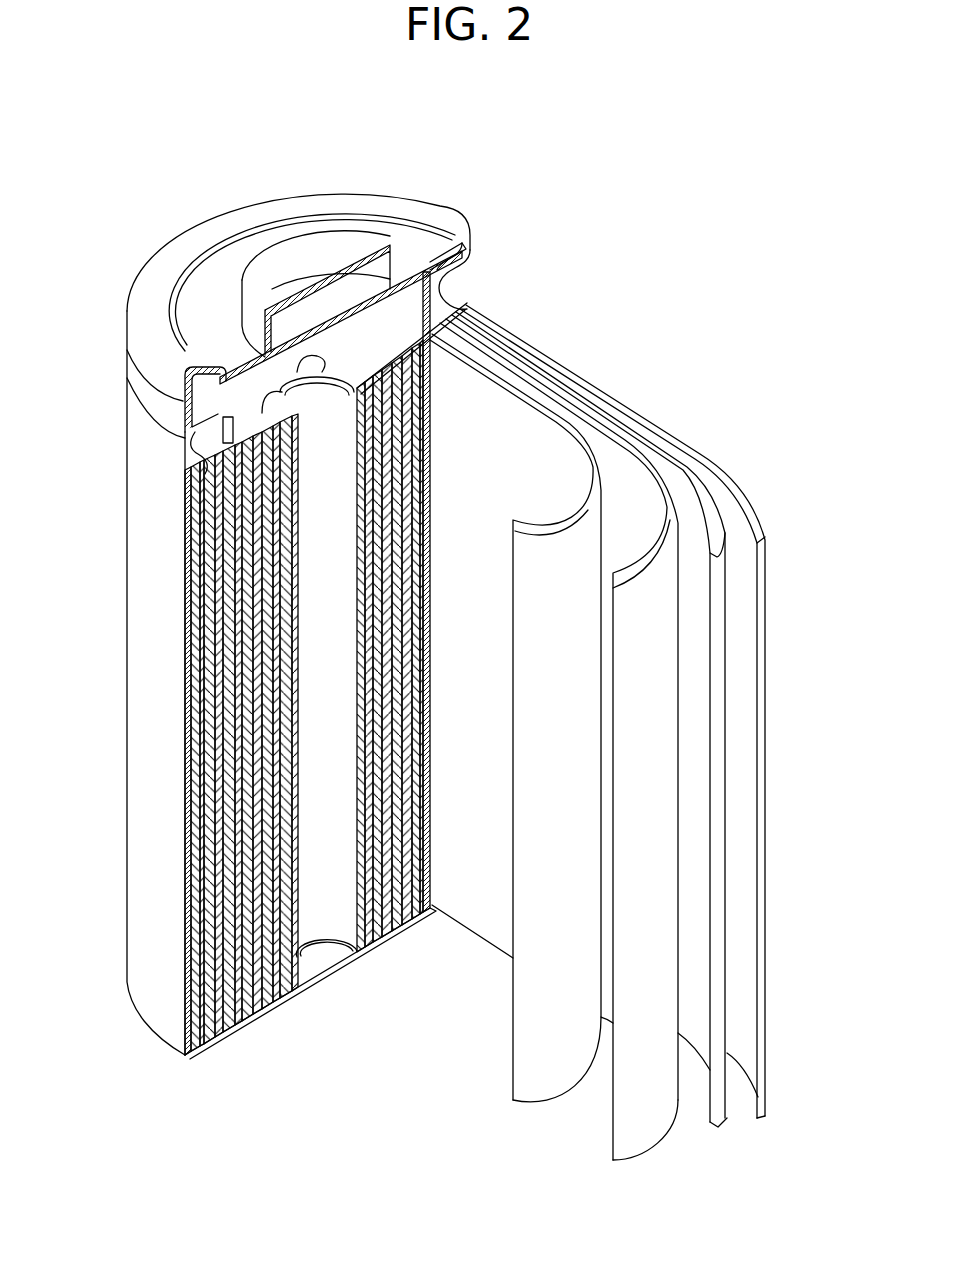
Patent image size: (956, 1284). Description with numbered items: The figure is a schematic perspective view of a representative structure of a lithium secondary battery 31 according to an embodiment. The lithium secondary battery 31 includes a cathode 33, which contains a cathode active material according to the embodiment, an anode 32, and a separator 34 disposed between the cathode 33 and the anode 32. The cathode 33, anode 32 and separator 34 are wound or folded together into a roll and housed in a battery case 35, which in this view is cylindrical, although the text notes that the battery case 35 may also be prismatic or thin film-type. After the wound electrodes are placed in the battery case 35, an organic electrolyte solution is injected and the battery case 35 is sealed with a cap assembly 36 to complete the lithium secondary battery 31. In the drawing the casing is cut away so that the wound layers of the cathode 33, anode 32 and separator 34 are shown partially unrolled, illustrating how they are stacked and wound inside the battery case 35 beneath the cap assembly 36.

The lithium secondary battery 31 is at (572, 284).
The anode 32 is at (754, 510).
The cathode 33 is at (653, 483).
The separator 34 is at (586, 446).
The battery case 35 is at (160, 737).
The cap assembly 36 is at (305, 252).